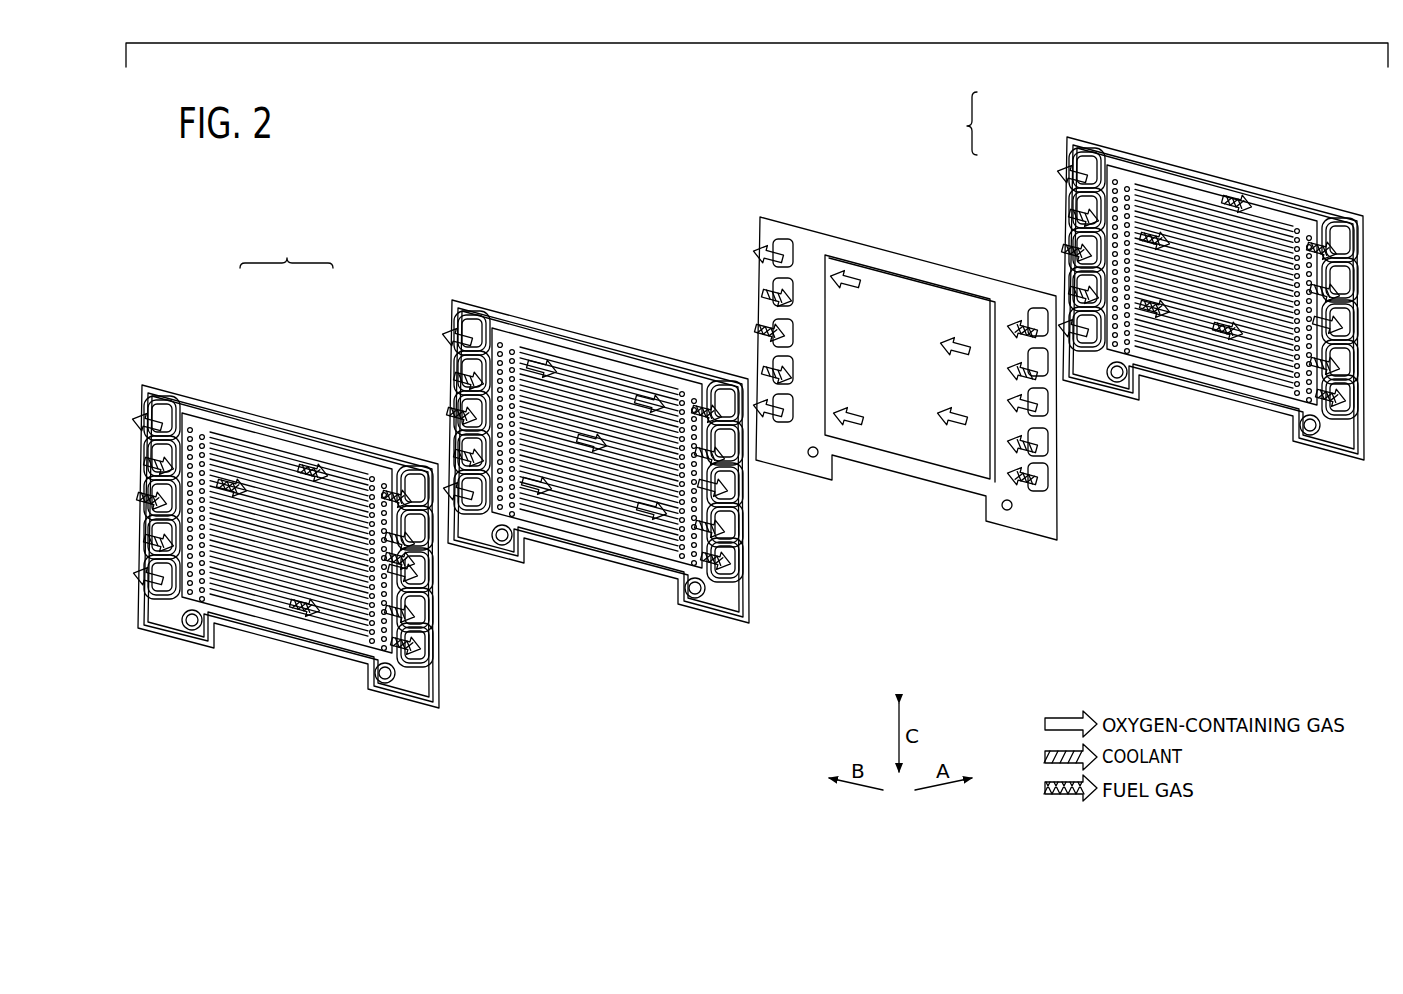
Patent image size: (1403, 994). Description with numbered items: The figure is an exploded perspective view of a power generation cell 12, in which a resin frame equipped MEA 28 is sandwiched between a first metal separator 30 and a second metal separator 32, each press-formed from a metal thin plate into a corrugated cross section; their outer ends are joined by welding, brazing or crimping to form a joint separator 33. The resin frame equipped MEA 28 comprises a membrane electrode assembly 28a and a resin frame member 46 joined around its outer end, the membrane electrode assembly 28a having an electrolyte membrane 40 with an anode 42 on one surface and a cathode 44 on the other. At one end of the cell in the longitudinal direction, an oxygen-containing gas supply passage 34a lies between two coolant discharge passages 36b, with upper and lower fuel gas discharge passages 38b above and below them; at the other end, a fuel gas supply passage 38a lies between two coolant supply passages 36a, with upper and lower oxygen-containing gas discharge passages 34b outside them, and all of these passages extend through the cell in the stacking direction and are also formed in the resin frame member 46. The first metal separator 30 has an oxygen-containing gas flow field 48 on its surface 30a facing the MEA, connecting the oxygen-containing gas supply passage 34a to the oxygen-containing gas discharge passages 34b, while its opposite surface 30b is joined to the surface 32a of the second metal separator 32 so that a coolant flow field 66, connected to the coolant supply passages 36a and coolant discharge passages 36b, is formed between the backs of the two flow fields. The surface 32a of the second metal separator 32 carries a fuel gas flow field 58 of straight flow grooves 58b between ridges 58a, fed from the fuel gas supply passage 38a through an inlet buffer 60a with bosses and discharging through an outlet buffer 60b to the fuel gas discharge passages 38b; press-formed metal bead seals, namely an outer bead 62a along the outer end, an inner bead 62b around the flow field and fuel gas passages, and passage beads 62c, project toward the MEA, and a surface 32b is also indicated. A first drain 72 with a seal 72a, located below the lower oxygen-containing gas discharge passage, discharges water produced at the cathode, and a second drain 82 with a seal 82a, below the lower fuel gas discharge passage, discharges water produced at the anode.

The power generation cell 12 is at (730, 210).
The resin frame equipped MEA 28 is at (918, 162).
The membrane electrode assembly 28a is at (900, 268).
The first metal separator 30 is at (440, 302).
The surface of the first metal separator 30a is at (746, 598).
The surface of the first metal separator 30b is at (740, 615).
The second metal separator 32 is at (222, 398).
The surface of the second metal separator 32a is at (292, 620).
The first separator cutout portion 32b is at (334, 623).
The joint separator 33 is at (608, 180).
The oxygen-containing gas supply passage 34a is at (432, 552).
The oxygen-containing gas discharge passages 34b is at (1120, 94).
The coolant supply passages 36a is at (167, 410).
The coolant discharge passages 36b is at (420, 466).
The fuel gas supply passage 38a is at (447, 395).
The fuel gas discharge passages 38b is at (408, 458).
The electrolyte membrane 40 is at (926, 452).
The anode 42 is at (867, 256).
The cathode 44 is at (903, 440).
The resin frame member 46 is at (827, 245).
The oxygen-containing gas flow field 48 is at (621, 385).
The fuel gas flow field 58 is at (1262, 112).
The ridges 58a is at (1185, 192).
The straight flow grooves 58b is at (1230, 210).
The inlet buffer 60a is at (1128, 178).
The outlet buffer 60b is at (1300, 374).
The outer bead 62a is at (1305, 438).
The inner bead 62b is at (1314, 376).
The passage beads 62c is at (1310, 237).
The coolant flow field 66 is at (580, 382).
The first drain 72 is at (196, 630).
The seal 72a is at (222, 650).
The second drain 82 is at (384, 680).
The seal 82a is at (372, 702).